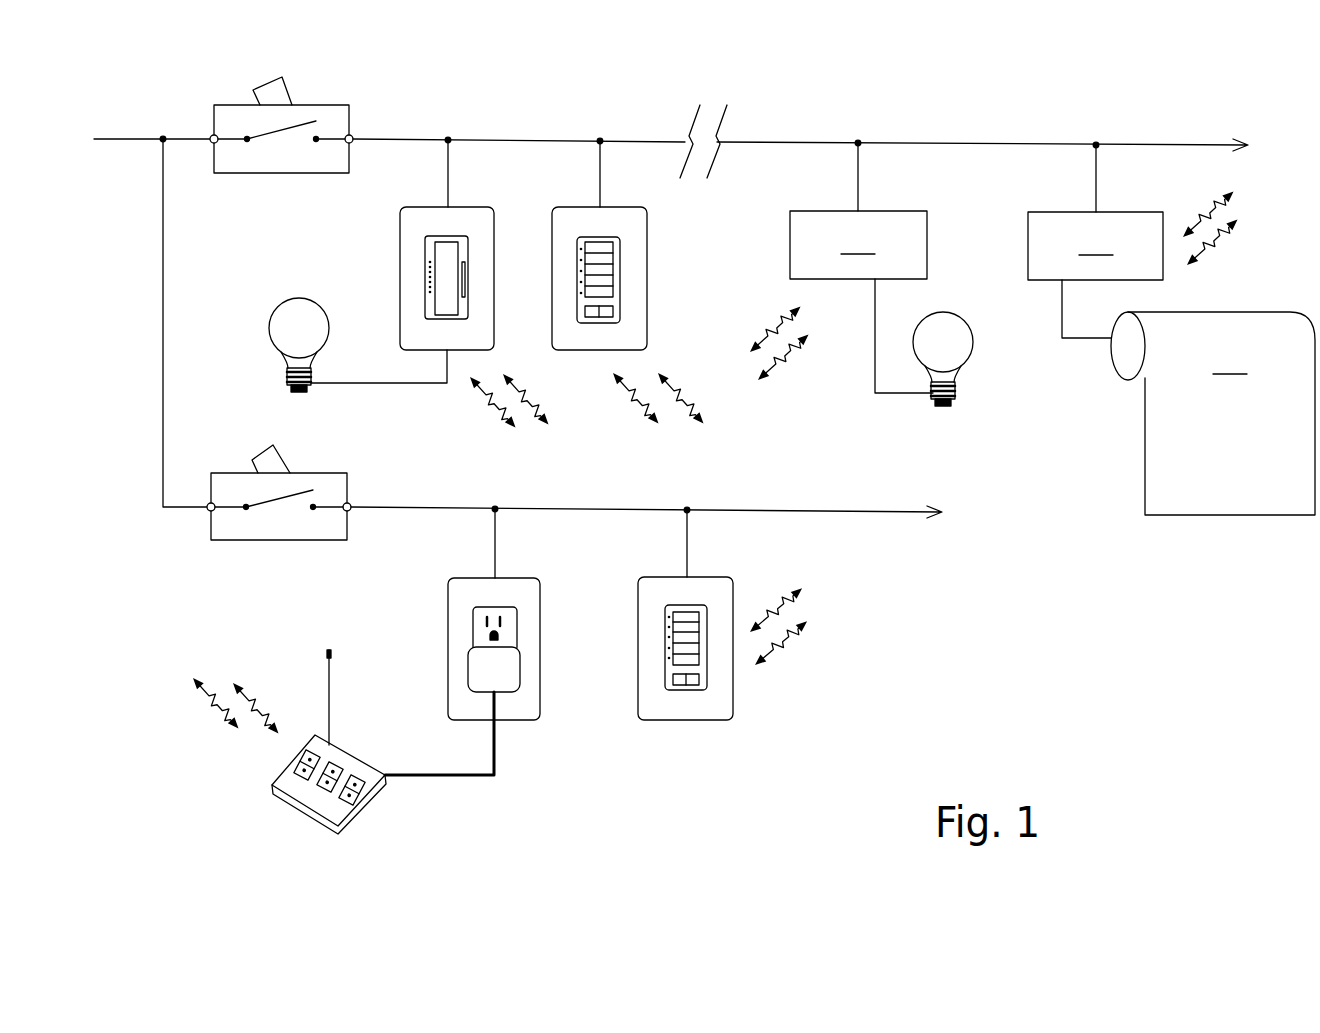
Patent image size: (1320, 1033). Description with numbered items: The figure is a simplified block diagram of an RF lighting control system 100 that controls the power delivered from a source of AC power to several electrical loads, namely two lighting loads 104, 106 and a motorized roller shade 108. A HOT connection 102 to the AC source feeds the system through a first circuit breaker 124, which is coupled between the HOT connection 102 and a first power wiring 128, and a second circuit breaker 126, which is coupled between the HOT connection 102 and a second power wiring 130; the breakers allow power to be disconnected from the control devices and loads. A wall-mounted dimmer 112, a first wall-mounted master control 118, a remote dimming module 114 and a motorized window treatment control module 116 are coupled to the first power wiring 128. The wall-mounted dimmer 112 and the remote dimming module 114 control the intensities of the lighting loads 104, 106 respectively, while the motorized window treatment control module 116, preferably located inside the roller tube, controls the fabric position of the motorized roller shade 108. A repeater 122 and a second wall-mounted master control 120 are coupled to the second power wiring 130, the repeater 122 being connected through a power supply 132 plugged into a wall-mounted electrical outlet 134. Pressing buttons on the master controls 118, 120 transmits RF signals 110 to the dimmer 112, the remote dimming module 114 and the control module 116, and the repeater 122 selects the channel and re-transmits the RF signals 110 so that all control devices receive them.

The RF lighting control system 100 is at (1037, 701).
The HOT connection 102 is at (133, 139).
The lighting load 104 is at (278, 308).
The lighting load 106 is at (973, 342).
The motorized roller shade 108 is at (1213, 413).
The RF signals 110 is at (569, 447).
The wall-mounted dimmer 112 is at (400, 240).
The remote dimming module 114 is at (861, 268).
The motorized window treatment control module 116 is at (1095, 241).
The first wall-mounted master control 118 is at (562, 207).
The second wall-mounted master control 120 is at (710, 720).
The repeater 122 is at (352, 825).
The first circuit breaker 124 is at (332, 105).
The second circuit breaker 126 is at (262, 540).
The first power wiring 128 is at (567, 139).
The second power wiring 130 is at (840, 512).
The power supply 132 is at (520, 668).
The wall-mounted electrical outlet 134 is at (448, 598).